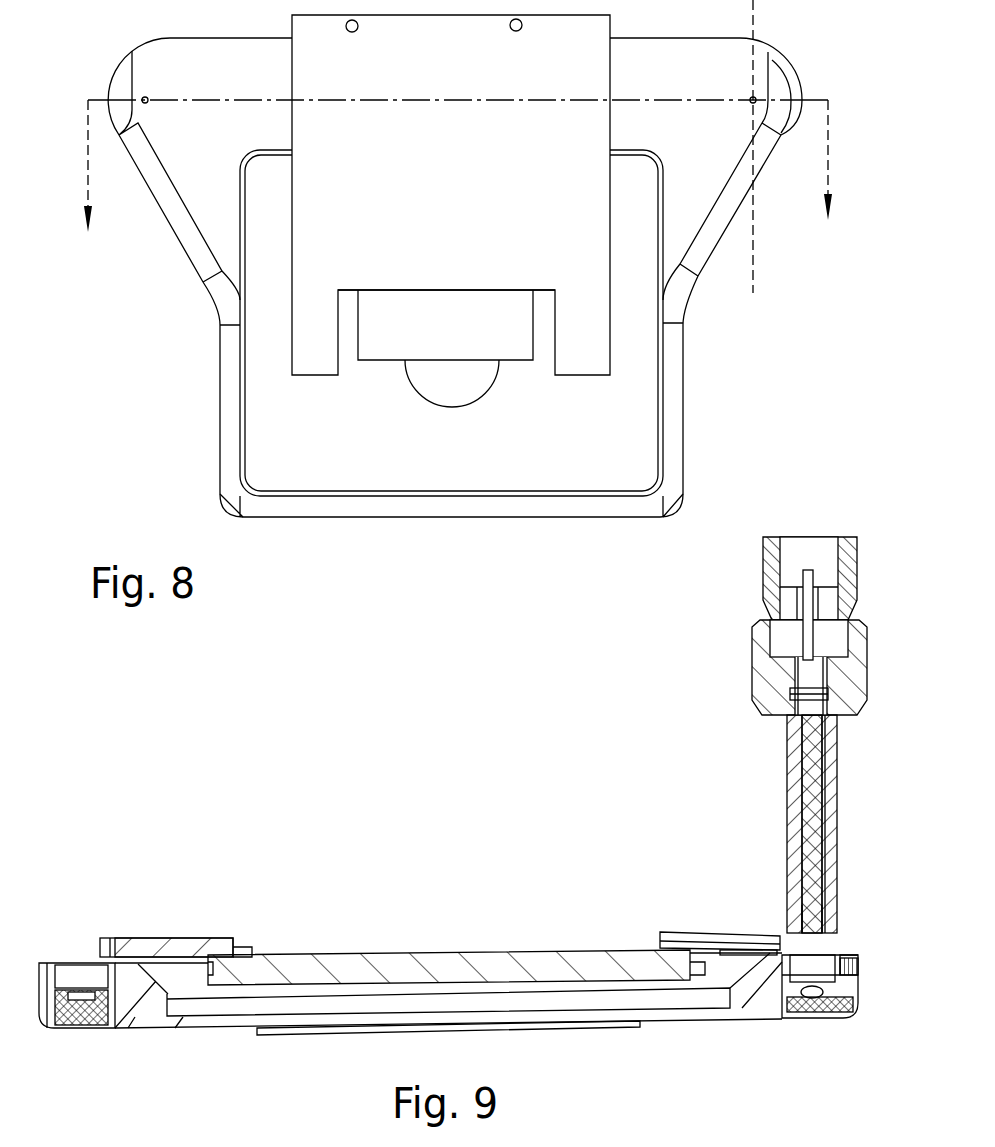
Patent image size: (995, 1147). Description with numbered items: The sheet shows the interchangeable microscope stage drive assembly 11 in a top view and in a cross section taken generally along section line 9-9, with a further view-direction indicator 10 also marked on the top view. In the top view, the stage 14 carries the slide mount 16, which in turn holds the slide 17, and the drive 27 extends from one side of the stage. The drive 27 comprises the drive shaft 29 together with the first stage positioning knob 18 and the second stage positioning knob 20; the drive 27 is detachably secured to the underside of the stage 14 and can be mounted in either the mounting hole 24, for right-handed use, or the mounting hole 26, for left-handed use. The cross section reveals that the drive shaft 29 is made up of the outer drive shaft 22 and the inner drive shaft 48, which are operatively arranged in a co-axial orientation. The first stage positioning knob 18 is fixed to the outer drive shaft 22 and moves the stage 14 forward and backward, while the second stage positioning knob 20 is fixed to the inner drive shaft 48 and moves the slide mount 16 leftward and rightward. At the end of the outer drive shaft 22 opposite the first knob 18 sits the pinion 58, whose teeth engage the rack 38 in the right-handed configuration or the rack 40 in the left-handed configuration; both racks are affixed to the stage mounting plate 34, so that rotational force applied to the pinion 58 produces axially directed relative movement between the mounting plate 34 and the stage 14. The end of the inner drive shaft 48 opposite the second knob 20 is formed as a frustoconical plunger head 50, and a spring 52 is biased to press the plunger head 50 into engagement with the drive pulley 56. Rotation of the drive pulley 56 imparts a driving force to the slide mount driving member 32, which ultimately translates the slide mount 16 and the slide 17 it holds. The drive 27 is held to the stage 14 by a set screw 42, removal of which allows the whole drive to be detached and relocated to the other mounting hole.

In FIG. 8, the section line 9- 9 is at (457, 183).
In FIG. 8, the section line 10- 10 is at (753, 293).
In FIG. 8, the interchangeable microscope stage drive assembly 11 is at (170, 386).
In FIG. 8, the stage 14 is at (447, 507).
In FIG. 9, the stage 14 is at (133, 1018).
In FIG. 8, the slide mount 16 is at (397, 245).
In FIG. 9, the slide mount 16 is at (295, 1037).
In FIG. 8, the slide 17 is at (545, 348).
In FIG. 9, the first stage positioning knob 18 is at (752, 672).
In FIG. 9, the second stage positioning knob 20 is at (765, 562).
In FIG. 9, the outer drive shaft 22 is at (787, 792).
In FIG. 9, the mounting hole 24 is at (803, 1020).
In FIG. 9, the mounting hole 26 is at (76, 975).
In FIG. 9, the drive 27 is at (695, 705).
In FIG. 9, the drive shaft 29 is at (772, 809).
In FIG. 9, the slide mount driving member 32 is at (668, 1020).
In FIG. 9, the stage mounting plate 34 is at (488, 965).
In FIG. 9, the rack 38 is at (677, 933).
In FIG. 9, the rack 40 is at (165, 945).
In FIG. 9, the set screw 42 is at (856, 1000).
In FIG. 9, the inner drive shaft 48 is at (810, 857).
In FIG. 9, the frustoconical plunger head 50 is at (852, 950).
In FIG. 9, the spring 52 is at (775, 933).
In FIG. 9, the drive pulley 56 is at (783, 997).
In FIG. 9, the pinion 58 is at (825, 930).